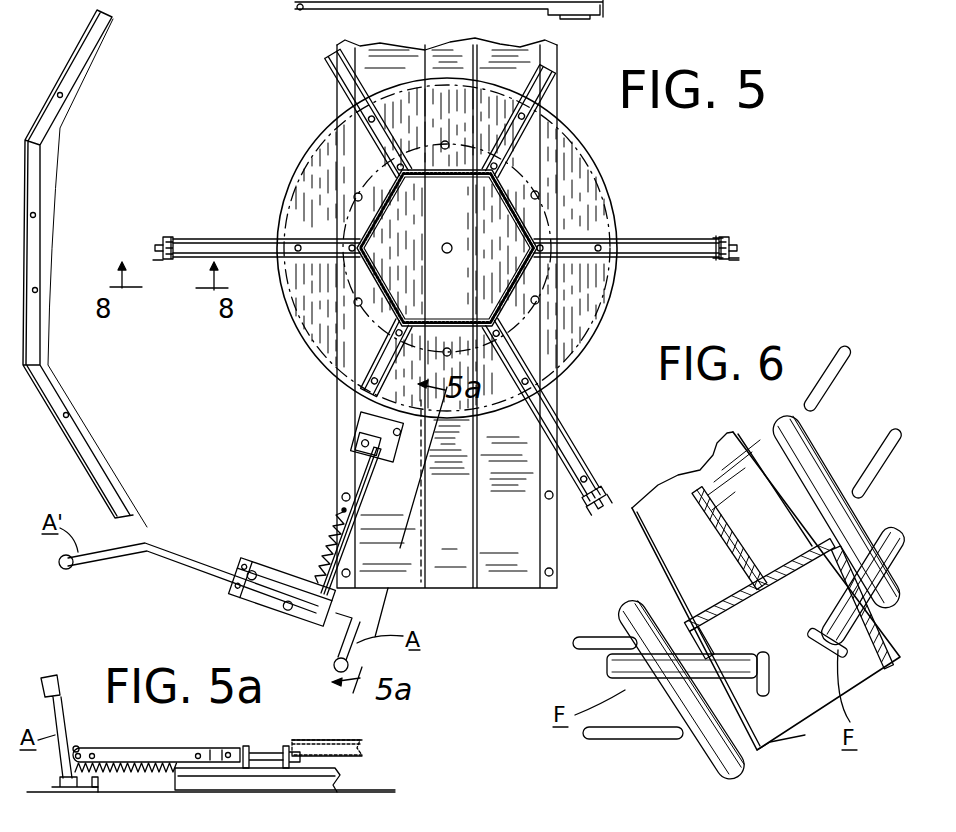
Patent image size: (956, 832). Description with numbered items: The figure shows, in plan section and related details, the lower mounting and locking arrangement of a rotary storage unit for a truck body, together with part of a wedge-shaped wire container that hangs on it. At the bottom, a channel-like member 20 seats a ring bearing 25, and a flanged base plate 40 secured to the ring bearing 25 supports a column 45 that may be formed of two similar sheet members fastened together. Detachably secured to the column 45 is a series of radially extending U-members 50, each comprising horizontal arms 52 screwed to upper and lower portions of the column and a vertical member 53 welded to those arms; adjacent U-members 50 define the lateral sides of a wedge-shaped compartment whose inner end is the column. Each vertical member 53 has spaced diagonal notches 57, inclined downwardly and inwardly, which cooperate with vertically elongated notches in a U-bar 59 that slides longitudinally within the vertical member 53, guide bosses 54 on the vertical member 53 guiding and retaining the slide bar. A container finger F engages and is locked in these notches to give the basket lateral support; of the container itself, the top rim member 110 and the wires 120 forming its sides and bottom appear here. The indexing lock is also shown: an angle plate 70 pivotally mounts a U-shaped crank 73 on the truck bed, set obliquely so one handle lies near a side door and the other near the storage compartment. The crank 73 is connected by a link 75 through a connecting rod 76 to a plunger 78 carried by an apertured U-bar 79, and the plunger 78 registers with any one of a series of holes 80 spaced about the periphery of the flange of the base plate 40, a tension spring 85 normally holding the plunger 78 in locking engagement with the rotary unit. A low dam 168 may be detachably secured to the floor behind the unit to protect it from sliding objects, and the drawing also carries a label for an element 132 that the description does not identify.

In FIG. 5, the dam 168 is at (68, 60).
In FIG. 5, the top rail 132 is at (600, 13).
In FIG. 5, the channel-like member 20 is at (500, 572).
In FIG. 5A, the channel-like member 20 is at (345, 776).
In FIG. 5, the flanged base plate 40 is at (614, 298).
In FIG. 5A, the flanged base plate 40 is at (362, 744).
In FIG. 5, the ring bearing 25 is at (605, 155).
In FIG. 5, the column 45 is at (528, 212).
In FIG. 5, the U-member 50 is at (740, 232).
In FIG. 5, the horizontal arm 52 is at (392, 140).
In FIG. 6, the horizontal arm 52 is at (727, 437).
In FIG. 5, the vertical member 53 is at (740, 262).
In FIG. 6, the vertical member 53 is at (720, 600).
In FIG. 5, the U-bar 59 is at (740, 245).
In FIG. 6, the U-bar 59 is at (740, 613).
In FIG. 5, the angle plate 70 is at (258, 560).
In FIG. 5A, the angle plate 70 is at (100, 785).
In FIG. 5, the U-shaped crank 73 is at (192, 550).
In FIG. 5A, the link 75 is at (80, 750).
In FIG. 5, the connecting rod 76 is at (352, 480).
In FIG. 5A, the connecting rod 76 is at (180, 748).
In FIG. 5, the plunger 78 is at (362, 415).
In FIG. 5A, the plunger 78 is at (283, 747).
In FIG. 5A, the apertured U-bar 79 is at (248, 745).
In FIG. 5, the holes 80 is at (360, 433).
In FIG. 5, the tension spring 85 is at (314, 545).
In FIG. 5A, the tension spring 85 is at (140, 775).
In FIG. 6, the guide bosses 54 is at (768, 745).
In FIG. 6, the diagonal notches 57 is at (713, 660).
In FIG. 6, the top rim member 110 is at (820, 463).
In FIG. 6, the wires 120 is at (838, 365).